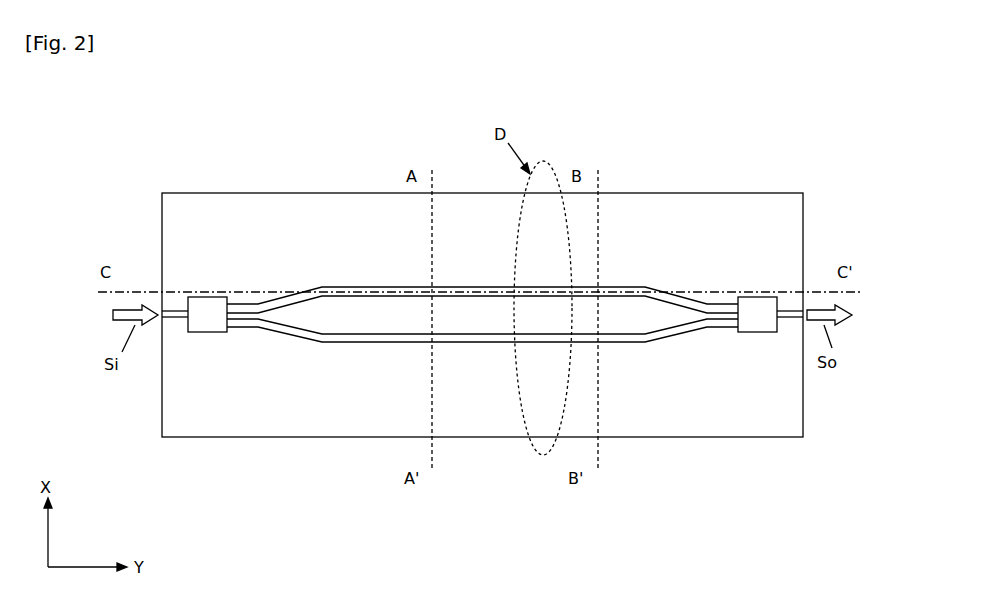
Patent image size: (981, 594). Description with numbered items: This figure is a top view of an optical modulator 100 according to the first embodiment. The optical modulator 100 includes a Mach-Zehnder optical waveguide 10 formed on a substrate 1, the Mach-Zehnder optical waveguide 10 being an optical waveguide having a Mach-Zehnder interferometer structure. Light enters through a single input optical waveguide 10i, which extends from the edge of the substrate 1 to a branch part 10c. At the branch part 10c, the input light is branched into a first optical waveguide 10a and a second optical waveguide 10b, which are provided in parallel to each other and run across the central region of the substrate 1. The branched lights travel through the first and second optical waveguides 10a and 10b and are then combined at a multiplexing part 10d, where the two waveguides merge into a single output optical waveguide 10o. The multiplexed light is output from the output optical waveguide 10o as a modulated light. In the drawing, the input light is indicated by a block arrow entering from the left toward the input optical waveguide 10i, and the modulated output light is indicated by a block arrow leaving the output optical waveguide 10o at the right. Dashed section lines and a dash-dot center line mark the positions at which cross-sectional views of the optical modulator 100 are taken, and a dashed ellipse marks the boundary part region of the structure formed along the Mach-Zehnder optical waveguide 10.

The optical modulator 100 is at (148, 112).
The substrate 1 is at (230, 193).
The Mach-Zehnder optical waveguide 10 is at (497, 343).
The input optical waveguide 10i is at (180, 318).
The branch part 10c is at (200, 333).
The first optical waveguide 10a is at (357, 344).
The second optical waveguide 10b is at (353, 287).
The multiplexing part 10d is at (755, 333).
The output optical waveguide 10o is at (786, 318).